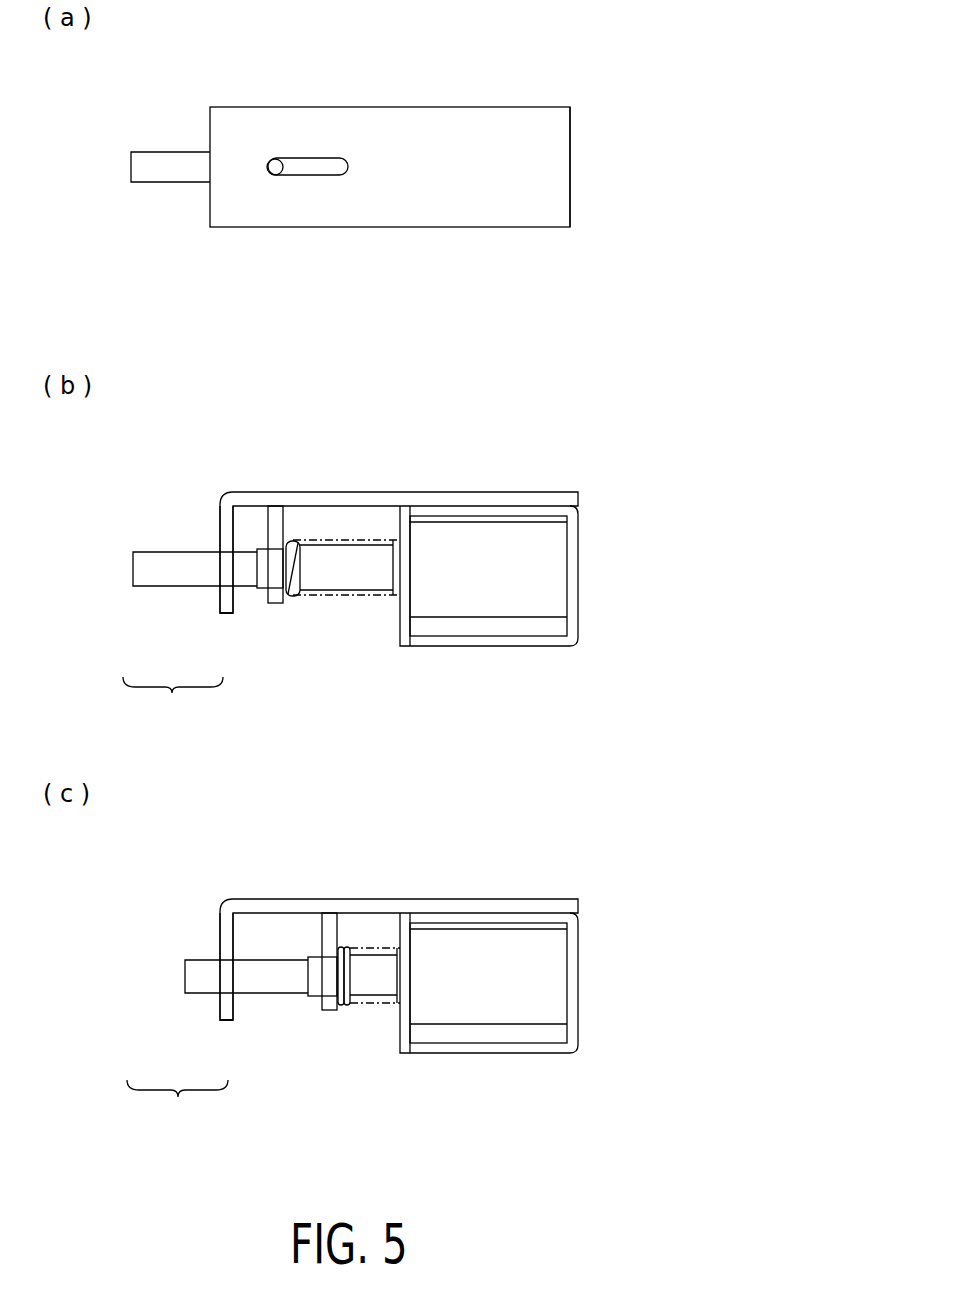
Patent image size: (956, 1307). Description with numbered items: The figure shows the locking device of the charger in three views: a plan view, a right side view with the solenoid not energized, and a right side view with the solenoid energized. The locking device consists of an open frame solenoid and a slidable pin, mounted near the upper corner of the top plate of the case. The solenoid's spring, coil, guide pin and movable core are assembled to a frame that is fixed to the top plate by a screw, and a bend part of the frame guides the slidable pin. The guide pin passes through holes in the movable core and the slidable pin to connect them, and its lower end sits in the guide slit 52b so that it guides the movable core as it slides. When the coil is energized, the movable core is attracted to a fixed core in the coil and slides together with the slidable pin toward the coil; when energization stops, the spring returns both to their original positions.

The guide slit 52b is at (325, 178).